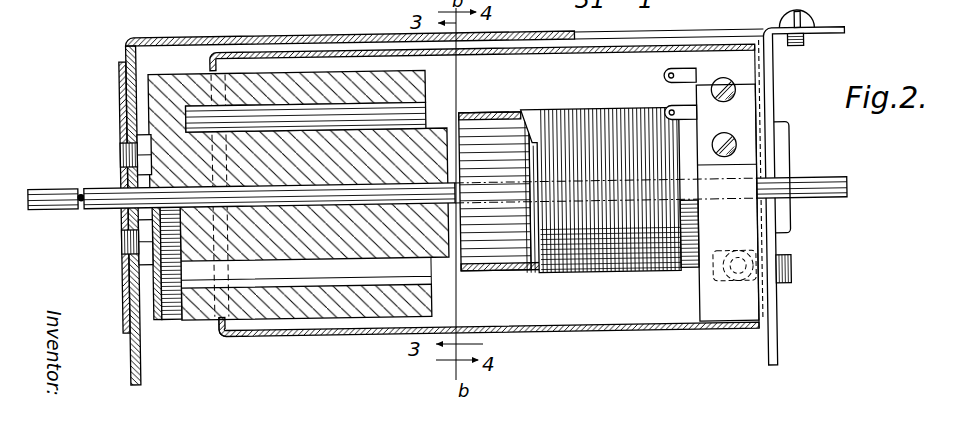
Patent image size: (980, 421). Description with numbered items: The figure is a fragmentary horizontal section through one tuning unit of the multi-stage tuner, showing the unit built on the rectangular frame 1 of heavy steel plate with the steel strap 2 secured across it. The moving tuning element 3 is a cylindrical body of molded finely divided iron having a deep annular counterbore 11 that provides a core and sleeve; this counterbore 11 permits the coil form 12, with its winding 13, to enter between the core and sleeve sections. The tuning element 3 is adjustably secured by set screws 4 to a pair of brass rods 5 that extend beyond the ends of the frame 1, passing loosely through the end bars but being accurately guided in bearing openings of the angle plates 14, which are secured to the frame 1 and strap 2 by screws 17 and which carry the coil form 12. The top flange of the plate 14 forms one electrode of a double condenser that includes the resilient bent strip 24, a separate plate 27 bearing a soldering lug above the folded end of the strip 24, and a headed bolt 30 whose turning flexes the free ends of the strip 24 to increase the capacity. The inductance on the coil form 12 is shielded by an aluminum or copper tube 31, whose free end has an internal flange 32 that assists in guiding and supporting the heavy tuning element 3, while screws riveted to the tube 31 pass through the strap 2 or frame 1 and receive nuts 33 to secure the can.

The rectangular frame 1 is at (727, 18).
The steel strap 2 is at (770, 80).
The tuning element 3 is at (302, 318).
The set screw 4 is at (155, 320).
The brass rod 5 is at (115, 208).
The annular counterbore 11 is at (423, 273).
The coil form 12 is at (520, 245).
The winding 13 is at (578, 97).
The mounting plate 14 is at (121, 118).
The screw 17 is at (121, 155).
The bent strip 24 is at (738, 214).
The plate bearing soldering lug 27 is at (666, 77).
The headed bolt 30 is at (713, 287).
The shielding tube 31 is at (350, 338).
The internal flange 32 is at (240, 339).
The nut 33 is at (790, 284).